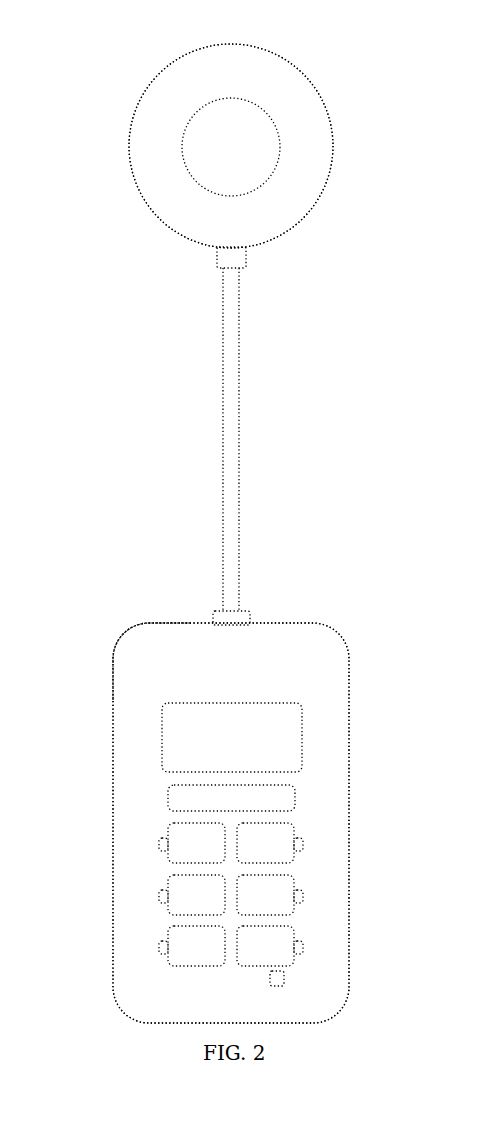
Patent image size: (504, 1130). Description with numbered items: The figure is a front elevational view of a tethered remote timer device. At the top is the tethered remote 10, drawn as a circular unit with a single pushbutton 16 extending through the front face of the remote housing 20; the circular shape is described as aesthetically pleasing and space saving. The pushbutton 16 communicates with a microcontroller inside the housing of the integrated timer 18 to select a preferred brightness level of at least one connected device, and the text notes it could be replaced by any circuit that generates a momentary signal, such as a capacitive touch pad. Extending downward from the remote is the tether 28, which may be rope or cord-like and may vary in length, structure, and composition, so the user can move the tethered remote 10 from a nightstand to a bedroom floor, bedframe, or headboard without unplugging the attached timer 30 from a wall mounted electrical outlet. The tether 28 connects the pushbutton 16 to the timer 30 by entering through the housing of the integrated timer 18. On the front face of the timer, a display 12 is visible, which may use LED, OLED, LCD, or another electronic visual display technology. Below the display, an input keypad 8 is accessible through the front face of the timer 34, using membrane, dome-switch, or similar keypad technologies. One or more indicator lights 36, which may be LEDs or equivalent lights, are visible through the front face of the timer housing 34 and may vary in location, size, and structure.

The tethered remote 10 is at (161, 56).
The pushbutton 16 is at (235, 140).
The remote housing 20 is at (308, 173).
The tether 28 is at (216, 446).
The timer 30 is at (92, 833).
The timer housing 34 is at (150, 662).
The integrated timer housing 18 is at (241, 810).
The display 12 is at (232, 737).
The input keypad 8 is at (243, 974).
The indicator lights 36 is at (304, 937).